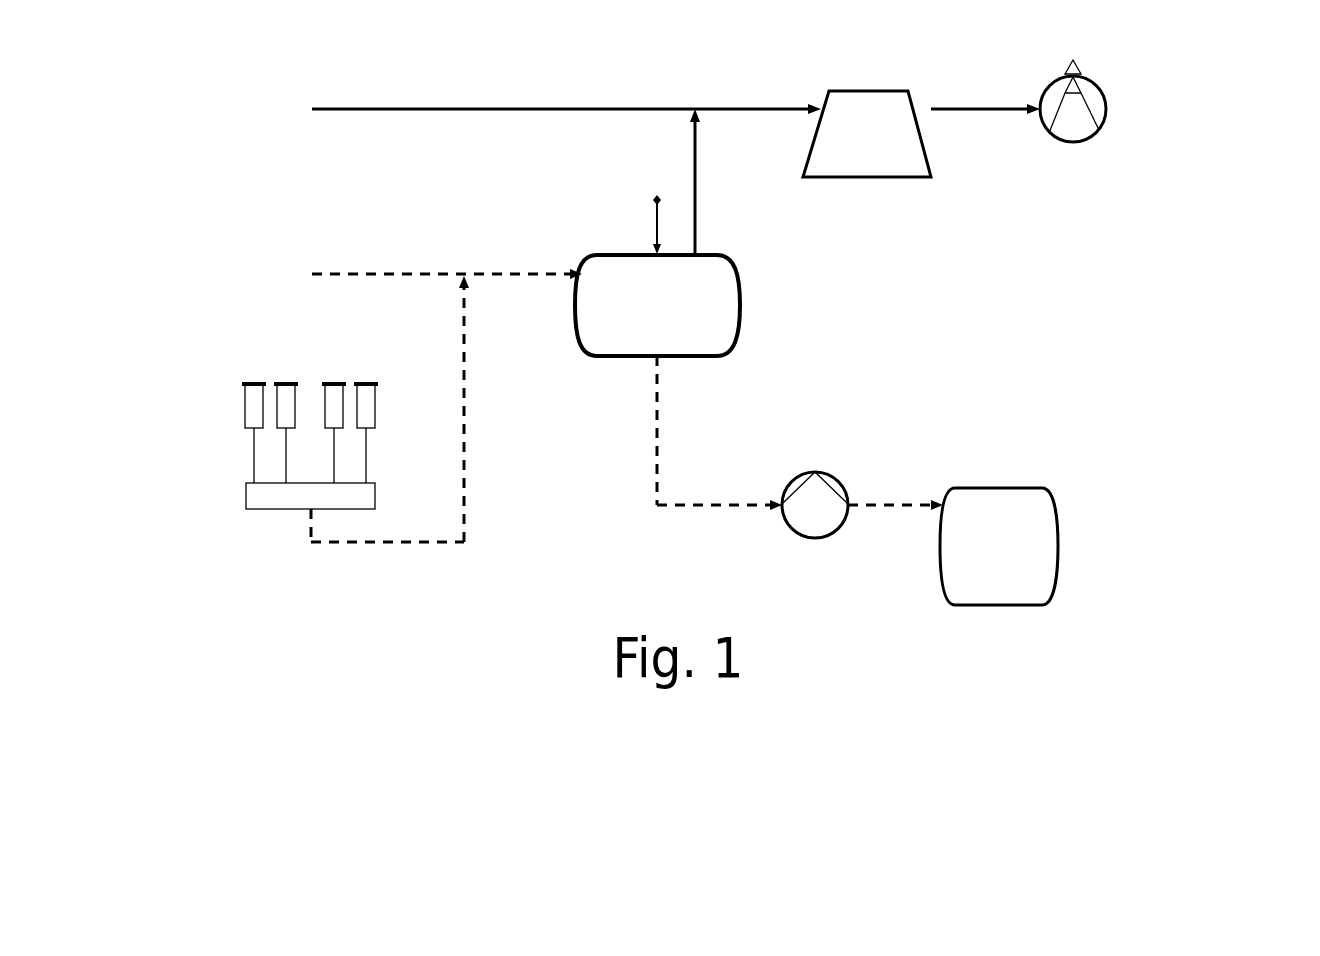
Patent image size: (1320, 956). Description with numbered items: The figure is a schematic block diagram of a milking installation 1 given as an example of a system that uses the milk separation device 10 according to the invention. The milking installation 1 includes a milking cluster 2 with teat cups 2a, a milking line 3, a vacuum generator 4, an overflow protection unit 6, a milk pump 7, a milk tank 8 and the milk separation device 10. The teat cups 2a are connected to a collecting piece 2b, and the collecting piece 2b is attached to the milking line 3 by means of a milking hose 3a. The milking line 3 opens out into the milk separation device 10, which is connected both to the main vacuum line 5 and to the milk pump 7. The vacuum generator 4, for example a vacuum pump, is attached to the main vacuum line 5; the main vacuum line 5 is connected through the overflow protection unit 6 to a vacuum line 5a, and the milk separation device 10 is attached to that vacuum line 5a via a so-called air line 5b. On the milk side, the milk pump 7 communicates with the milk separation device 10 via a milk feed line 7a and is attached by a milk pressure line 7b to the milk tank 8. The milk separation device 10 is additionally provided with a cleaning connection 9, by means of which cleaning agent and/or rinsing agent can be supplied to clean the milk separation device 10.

The milking installation 1 is at (1152, 269).
The milking cluster 2 is at (259, 465).
The teat cups 2a is at (226, 399).
The collecting piece 2b is at (252, 510).
The milking line 3 is at (353, 274).
The milking hose 3a is at (466, 543).
The vacuum generator 4 is at (1108, 107).
The main vacuum line 5 is at (945, 109).
The vacuum line 5a is at (538, 108).
The air line 5b is at (693, 190).
The overflow protection unit 6 is at (869, 90).
The milk pump 7 is at (795, 480).
The milk feed line 7a is at (655, 456).
The milk pressure line 7b is at (910, 503).
The milk tank 8 is at (1042, 488).
The cleaning connection 9 is at (655, 233).
The milk separation device 10 is at (742, 301).